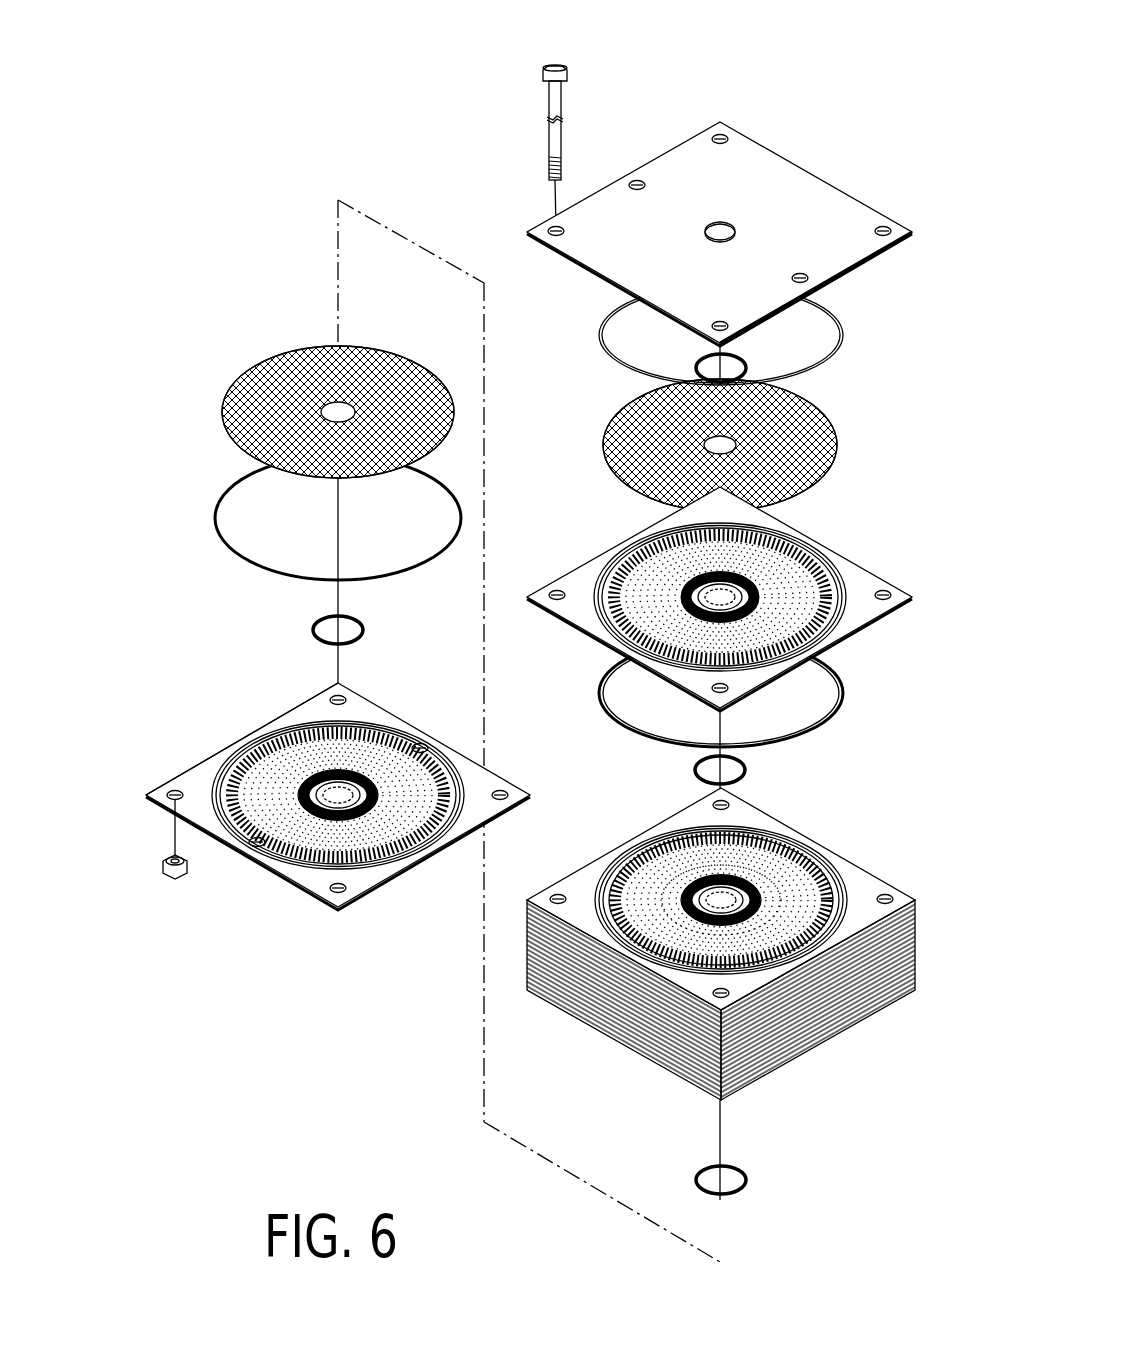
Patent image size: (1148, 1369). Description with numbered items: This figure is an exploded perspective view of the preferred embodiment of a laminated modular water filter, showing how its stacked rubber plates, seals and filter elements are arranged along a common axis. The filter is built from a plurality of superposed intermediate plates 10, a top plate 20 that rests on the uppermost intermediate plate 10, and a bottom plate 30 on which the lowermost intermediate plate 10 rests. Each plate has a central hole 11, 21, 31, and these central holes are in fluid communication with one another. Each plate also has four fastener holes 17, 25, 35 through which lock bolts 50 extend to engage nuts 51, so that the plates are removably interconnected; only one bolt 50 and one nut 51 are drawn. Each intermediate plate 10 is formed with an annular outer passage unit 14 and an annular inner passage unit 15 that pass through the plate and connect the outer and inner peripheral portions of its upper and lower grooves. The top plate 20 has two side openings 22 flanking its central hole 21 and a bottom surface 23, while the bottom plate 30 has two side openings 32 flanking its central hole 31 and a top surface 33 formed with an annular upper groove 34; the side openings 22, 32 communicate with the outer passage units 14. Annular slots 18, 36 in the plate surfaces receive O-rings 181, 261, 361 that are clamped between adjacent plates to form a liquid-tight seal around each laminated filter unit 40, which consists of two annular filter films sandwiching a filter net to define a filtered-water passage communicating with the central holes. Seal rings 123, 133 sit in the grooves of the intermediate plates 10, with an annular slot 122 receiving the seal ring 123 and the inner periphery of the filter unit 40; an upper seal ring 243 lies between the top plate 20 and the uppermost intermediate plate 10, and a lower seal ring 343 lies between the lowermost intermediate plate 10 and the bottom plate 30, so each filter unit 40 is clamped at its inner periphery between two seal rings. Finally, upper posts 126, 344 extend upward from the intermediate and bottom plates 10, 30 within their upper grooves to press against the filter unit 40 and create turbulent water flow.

The intermediate plate 10 is at (838, 546).
The central hole 11 is at (703, 908).
The annular outer passage unit 14 is at (690, 968).
The annular inner passage unit 15 is at (694, 934).
The fastener hole 17 is at (557, 590).
The annular slot 18 is at (826, 867).
The top plate 20 is at (695, 185).
The central hole 21 is at (712, 224).
The side opening 22 is at (637, 180).
The bottom surface 23 is at (878, 263).
The fastener hole 25 is at (883, 226).
The bottom plate 30 is at (317, 836).
The central hole 31 is at (335, 806).
The side opening 32 is at (421, 744).
The top surface 33 is at (198, 766).
The annular upper groove 34 is at (257, 750).
The fastener hole 35 is at (338, 896).
The annular slot 36 is at (370, 868).
The laminated filter unit 40 is at (236, 379).
The lock bolt 50 is at (564, 67).
The nut 51 is at (166, 882).
The annular slot 122 is at (740, 900).
The intermediate seal ring 123 is at (746, 773).
The upper post 126 is at (660, 858).
The intermediate seal ring 133 is at (746, 1180).
The O-ring 181 is at (830, 738).
The upper seal ring 243 is at (740, 366).
The O-ring 261 is at (845, 324).
The lower seal ring 343 is at (316, 626).
The upper post 344 is at (290, 836).
The O-ring 361 is at (215, 506).